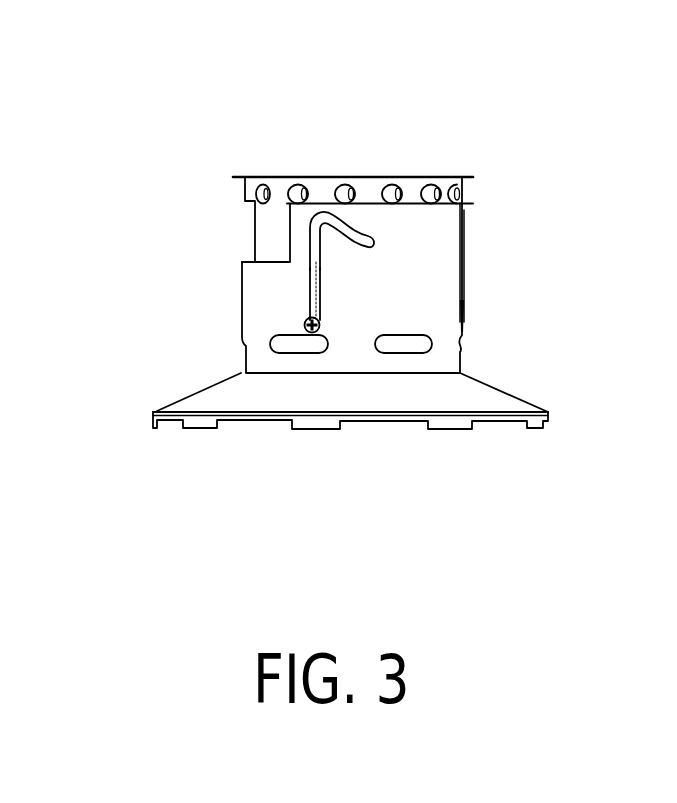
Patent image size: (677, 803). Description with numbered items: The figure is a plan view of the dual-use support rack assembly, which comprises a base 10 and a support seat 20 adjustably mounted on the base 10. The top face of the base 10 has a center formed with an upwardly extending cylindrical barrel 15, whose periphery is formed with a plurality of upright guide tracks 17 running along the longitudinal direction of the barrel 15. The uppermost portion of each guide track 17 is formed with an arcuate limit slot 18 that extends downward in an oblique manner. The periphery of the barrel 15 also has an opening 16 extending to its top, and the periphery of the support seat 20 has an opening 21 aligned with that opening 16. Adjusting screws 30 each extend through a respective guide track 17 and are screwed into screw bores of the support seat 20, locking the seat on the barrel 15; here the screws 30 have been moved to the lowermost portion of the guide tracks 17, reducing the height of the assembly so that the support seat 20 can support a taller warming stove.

The base 10 is at (475, 397).
The cylindrical barrel 15 is at (277, 303).
The opening 16 is at (250, 262).
The upright guide track 17 is at (318, 262).
The arcuate limit slot 18 is at (352, 214).
The support seat 20 is at (282, 215).
The opening 21 is at (263, 233).
The adjusting screw 30 is at (305, 327).